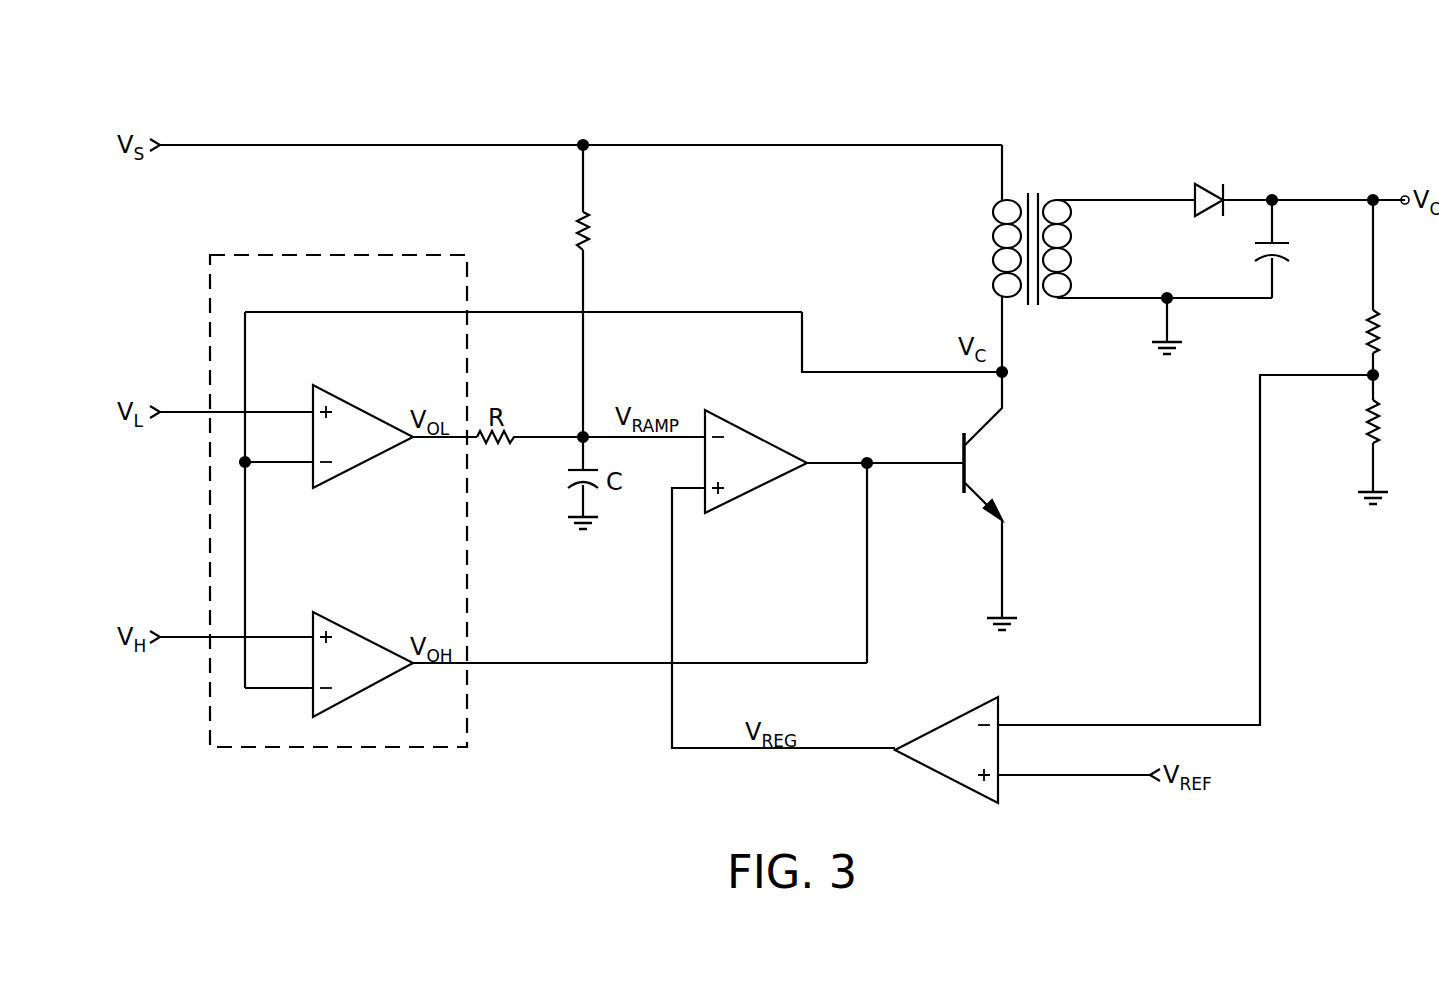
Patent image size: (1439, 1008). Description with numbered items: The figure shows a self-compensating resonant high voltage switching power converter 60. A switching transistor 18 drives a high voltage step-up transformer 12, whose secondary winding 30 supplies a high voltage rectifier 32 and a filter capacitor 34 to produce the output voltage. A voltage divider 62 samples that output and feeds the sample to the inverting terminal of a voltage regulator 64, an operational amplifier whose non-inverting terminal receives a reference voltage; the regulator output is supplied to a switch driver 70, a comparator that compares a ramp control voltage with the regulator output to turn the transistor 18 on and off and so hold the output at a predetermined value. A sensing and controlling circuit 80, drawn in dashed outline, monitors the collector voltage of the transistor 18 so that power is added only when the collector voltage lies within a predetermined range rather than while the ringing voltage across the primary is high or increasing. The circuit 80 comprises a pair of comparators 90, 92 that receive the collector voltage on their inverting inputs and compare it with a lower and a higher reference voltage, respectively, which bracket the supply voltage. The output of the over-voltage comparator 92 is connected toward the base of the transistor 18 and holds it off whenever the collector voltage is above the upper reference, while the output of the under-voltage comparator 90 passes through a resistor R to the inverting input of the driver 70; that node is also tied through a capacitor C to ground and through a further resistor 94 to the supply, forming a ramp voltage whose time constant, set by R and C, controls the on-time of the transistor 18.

The high voltage switching power converter 60 is at (850, 106).
The high voltage step-up transformer 12 is at (1132, 216).
The secondary winding 30 is at (1073, 253).
The high voltage rectifier 32 is at (1207, 187).
The filter capacitor 34 is at (1258, 244).
The voltage divider 62 is at (1380, 376).
The resistor 94 is at (590, 231).
The sensing and controlling circuit 80 is at (338, 254).
The comparator 90 is at (355, 404).
The comparator 92 is at (355, 632).
The switch driver 70 is at (752, 433).
The switching transistor 18 is at (1008, 458).
The voltage regulator 64 is at (940, 725).